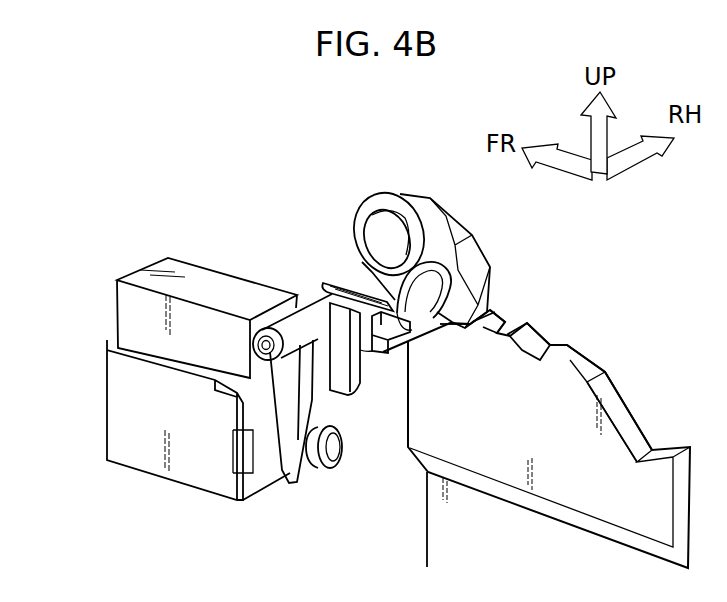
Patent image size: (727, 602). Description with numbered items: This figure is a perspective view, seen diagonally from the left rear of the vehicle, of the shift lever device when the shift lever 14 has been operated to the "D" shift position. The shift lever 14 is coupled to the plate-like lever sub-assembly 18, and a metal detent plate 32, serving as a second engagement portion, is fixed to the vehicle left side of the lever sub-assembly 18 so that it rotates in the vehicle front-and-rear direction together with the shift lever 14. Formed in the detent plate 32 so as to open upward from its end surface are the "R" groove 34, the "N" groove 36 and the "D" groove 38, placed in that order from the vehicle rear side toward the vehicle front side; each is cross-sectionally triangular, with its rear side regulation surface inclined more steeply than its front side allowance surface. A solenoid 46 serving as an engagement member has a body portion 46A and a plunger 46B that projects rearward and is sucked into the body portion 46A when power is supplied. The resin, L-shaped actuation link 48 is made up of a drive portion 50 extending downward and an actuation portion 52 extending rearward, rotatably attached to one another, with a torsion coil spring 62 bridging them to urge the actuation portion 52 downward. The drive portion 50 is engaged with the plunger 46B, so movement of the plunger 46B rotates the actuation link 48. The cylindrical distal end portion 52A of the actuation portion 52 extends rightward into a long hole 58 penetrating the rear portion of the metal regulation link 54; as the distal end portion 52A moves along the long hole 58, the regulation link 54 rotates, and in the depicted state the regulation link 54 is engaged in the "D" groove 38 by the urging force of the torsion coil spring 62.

The shift lever 14 is at (536, 439).
The lever sub-assembly 18 is at (504, 439).
The detent plate 32 is at (633, 412).
The "R" groove 34 is at (528, 358).
The "N" groove 36 is at (500, 330).
The "D" groove 38 is at (457, 327).
The solenoid 46 is at (168, 257).
The body portion 46A is at (105, 402).
The plunger 46B is at (340, 460).
The actuation link 48 is at (326, 280).
The drive portion 50 is at (293, 481).
The actuation portion 52 is at (428, 330).
The distal end portion 52A is at (480, 273).
The regulation link 54 is at (451, 247).
The long hole 58 is at (422, 234).
The torsion coil spring 62 is at (369, 378).